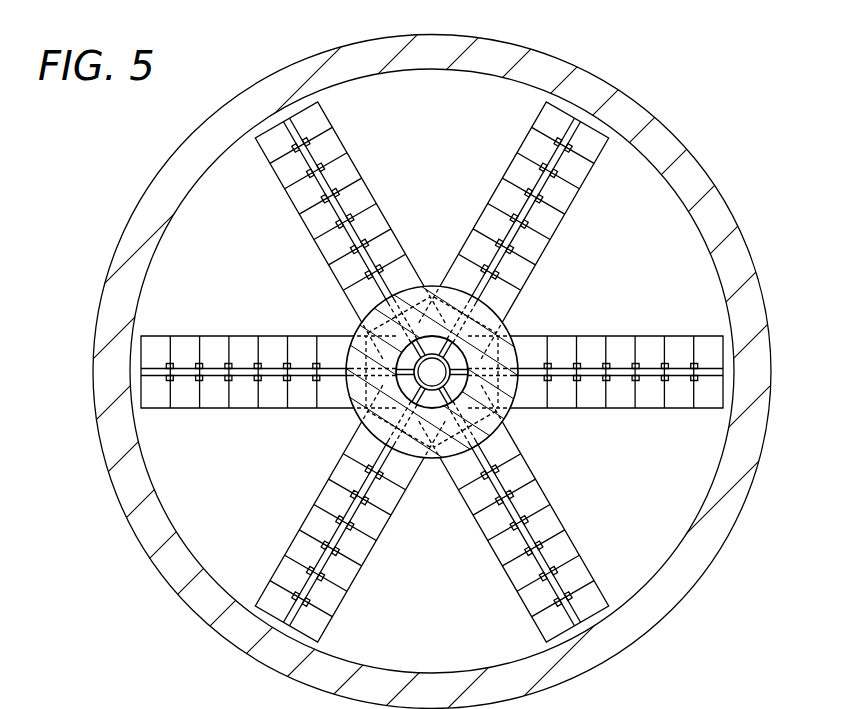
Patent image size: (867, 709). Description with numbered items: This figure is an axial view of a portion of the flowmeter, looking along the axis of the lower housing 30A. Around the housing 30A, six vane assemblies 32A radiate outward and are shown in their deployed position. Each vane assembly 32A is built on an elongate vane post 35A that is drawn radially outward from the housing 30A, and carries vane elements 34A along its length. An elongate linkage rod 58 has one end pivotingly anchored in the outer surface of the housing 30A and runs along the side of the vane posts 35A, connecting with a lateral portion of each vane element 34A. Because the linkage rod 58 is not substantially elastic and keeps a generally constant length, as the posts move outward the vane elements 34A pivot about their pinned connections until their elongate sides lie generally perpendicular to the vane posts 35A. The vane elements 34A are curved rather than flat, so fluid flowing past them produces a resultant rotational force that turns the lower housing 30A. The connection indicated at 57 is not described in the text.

The housing 30A is at (507, 412).
The vane assemblies 32A is at (237, 306).
The vane elements 34A is at (597, 173).
The vane posts 35A is at (557, 167).
The arm-hub joint 57 is at (360, 418).
The linkage rod 58 is at (533, 213).